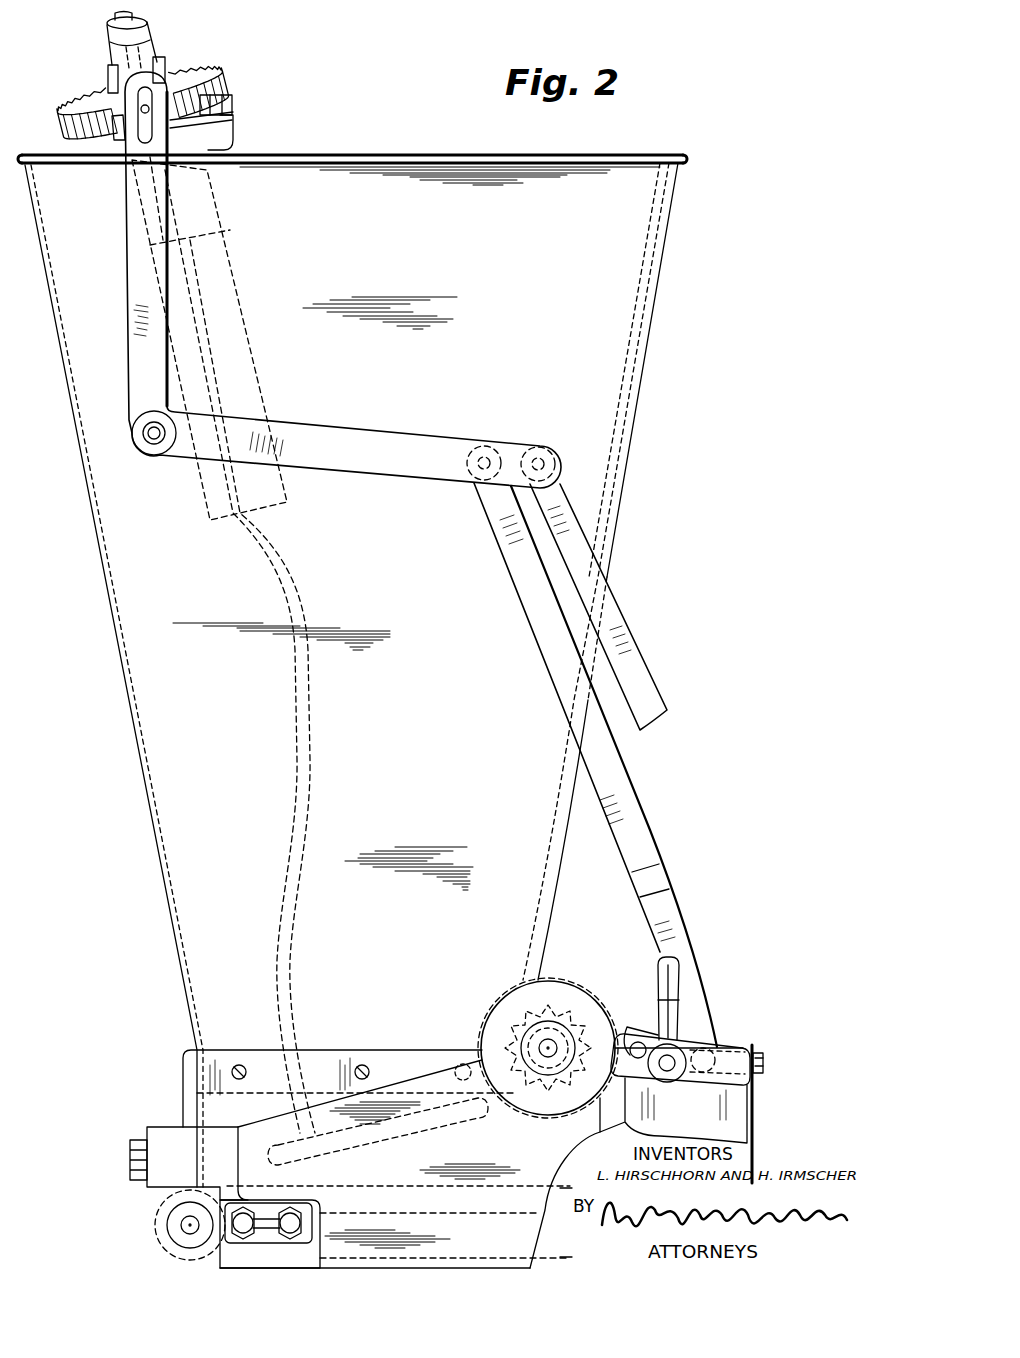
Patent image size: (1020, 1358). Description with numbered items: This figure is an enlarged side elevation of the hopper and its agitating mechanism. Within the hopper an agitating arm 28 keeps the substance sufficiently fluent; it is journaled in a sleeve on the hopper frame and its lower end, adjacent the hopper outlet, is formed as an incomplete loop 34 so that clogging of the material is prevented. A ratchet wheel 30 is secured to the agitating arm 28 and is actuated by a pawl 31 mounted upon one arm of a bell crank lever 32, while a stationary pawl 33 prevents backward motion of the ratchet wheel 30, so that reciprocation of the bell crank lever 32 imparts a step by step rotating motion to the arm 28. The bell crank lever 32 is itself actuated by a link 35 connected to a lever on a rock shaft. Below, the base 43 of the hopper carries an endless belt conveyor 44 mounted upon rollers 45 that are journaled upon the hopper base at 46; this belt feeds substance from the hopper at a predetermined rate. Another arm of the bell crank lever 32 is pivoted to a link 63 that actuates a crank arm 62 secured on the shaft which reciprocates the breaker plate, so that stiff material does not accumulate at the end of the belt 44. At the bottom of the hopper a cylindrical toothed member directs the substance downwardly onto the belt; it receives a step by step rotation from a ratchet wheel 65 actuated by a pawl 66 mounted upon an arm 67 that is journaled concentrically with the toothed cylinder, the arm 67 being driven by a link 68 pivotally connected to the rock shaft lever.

The agitating arm 28 is at (277, 592).
The ratchet wheel 30 is at (207, 68).
The pawl 31 is at (120, 130).
The bell crank lever 32 is at (152, 352).
The stationary pawl 33 is at (218, 105).
The incomplete loop 34 is at (403, 1093).
The link 35 is at (613, 627).
The base 43 is at (195, 1105).
The endless belt conveyor 44 is at (553, 1188).
The rollers 45 is at (162, 1224).
The journal 46 is at (238, 1238).
The crank arm 62 is at (682, 1038).
The link 63 is at (643, 850).
The ratchet wheel 65 is at (580, 997).
The pawl 66 is at (623, 1027).
The arm 67 is at (745, 1083).
The link 68 is at (677, 963).